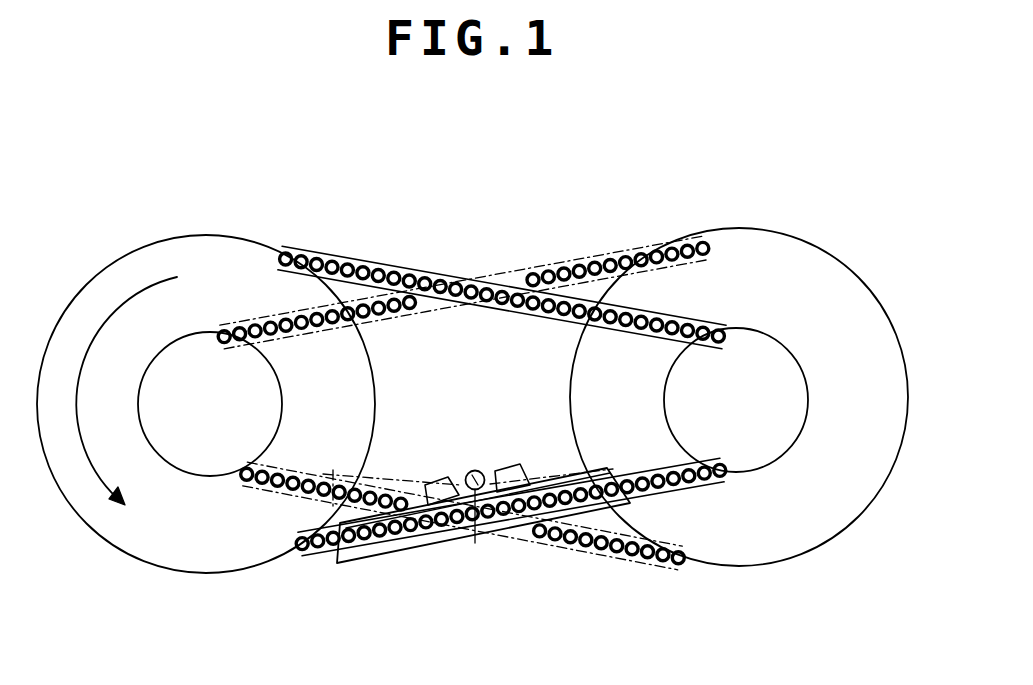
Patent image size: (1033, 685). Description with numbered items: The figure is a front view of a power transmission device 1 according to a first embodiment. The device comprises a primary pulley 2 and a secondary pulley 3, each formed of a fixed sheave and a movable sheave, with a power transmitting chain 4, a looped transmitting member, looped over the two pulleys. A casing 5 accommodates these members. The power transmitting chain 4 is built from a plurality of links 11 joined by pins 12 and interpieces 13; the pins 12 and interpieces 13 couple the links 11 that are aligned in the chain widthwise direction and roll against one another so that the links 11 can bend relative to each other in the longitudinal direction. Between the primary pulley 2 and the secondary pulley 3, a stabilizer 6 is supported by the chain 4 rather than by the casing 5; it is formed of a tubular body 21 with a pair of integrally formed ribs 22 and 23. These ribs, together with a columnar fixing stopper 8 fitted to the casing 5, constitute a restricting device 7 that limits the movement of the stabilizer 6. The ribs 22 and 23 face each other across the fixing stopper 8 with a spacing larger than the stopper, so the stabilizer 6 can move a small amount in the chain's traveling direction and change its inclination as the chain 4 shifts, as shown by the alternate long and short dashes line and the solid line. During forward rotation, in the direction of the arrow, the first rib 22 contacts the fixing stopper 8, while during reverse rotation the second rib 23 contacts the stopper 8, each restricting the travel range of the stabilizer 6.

The power transmission device 1 is at (785, 217).
The primary pulley 2 is at (143, 440).
The secondary pulley 3 is at (747, 473).
The power transmitting chain 4 is at (377, 260).
The casing 5 is at (395, 460).
The stabilizer 6 is at (440, 543).
The restricting device 7 is at (481, 457).
The fixing stopper 8 is at (477, 527).
The links 11 is at (470, 278).
The pins 12 is at (528, 292).
The interpieces 13 is at (513, 288).
The body 21 is at (333, 510).
The first rib 22 is at (427, 475).
The second rib 23 is at (510, 467).